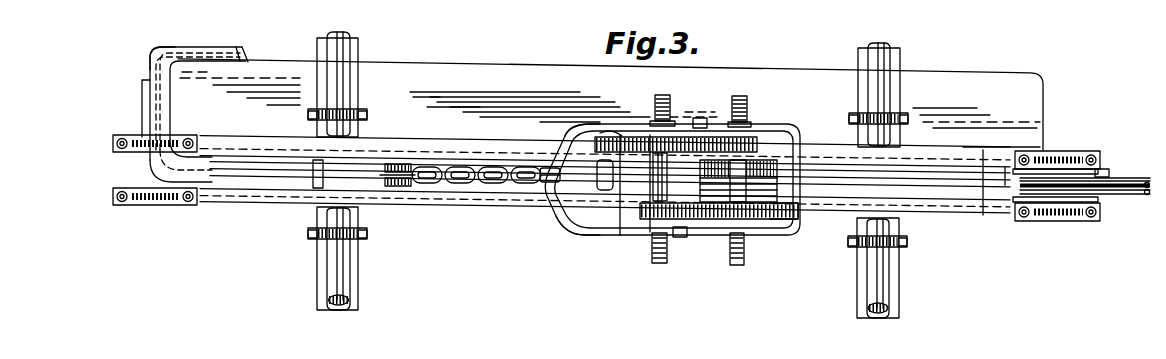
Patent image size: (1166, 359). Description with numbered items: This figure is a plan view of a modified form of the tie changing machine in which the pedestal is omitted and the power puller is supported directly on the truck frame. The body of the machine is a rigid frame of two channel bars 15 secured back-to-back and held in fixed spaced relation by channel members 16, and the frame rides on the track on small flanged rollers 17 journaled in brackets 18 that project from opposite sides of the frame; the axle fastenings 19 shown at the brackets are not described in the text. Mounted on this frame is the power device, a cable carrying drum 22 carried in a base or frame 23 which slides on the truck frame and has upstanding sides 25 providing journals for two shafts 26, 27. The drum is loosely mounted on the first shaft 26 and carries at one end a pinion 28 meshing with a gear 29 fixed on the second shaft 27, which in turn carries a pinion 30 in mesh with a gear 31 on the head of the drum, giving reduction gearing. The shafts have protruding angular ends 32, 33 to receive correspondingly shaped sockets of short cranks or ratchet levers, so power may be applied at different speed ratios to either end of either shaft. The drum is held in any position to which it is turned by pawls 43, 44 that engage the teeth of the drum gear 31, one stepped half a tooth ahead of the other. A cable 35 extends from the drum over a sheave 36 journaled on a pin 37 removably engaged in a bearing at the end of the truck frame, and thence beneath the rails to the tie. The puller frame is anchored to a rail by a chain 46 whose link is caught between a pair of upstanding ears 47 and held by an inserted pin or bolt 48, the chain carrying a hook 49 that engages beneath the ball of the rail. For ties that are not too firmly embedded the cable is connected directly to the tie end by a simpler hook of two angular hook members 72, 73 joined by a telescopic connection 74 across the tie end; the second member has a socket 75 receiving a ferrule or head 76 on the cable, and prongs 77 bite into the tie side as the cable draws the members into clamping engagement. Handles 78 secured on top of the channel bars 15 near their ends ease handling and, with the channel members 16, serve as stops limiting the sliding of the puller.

The channel bars 15 is at (268, 147).
The channel members 16 is at (222, 150).
The flanged rollers 17 is at (348, 104).
The brackets 18 is at (365, 128).
The axle nut 19 is at (368, 114).
The cable carrying drum 22 is at (790, 152).
The base or frame 23 is at (578, 124).
The upstanding sides 25 is at (612, 215).
The shaft 26 is at (745, 225).
The shaft 27 is at (582, 232).
The pinion 28 is at (750, 138).
The gear 29 is at (623, 130).
The pinion 30 is at (646, 222).
The gear 31 is at (800, 232).
The shaft end 32 is at (745, 98).
The shaft end 33 is at (658, 96).
The cable 35 is at (986, 182).
The sheave 36 is at (1137, 198).
The pin 37 is at (1103, 172).
The pawl 43 is at (742, 215).
The pawl 44 is at (722, 185).
The chain 46 is at (481, 185).
The upstanding ears 47 is at (548, 215).
The pin or bolt 48 is at (560, 212).
The hook 49 is at (328, 165).
The angular hook member 72 is at (150, 170).
The angular hook member 73 is at (186, 49).
The telescopic connection 74 is at (142, 103).
The socket 75 is at (157, 70).
The ferrule or head 76 is at (150, 56).
The prongs 77 is at (248, 60).
The handles 78 is at (135, 140).